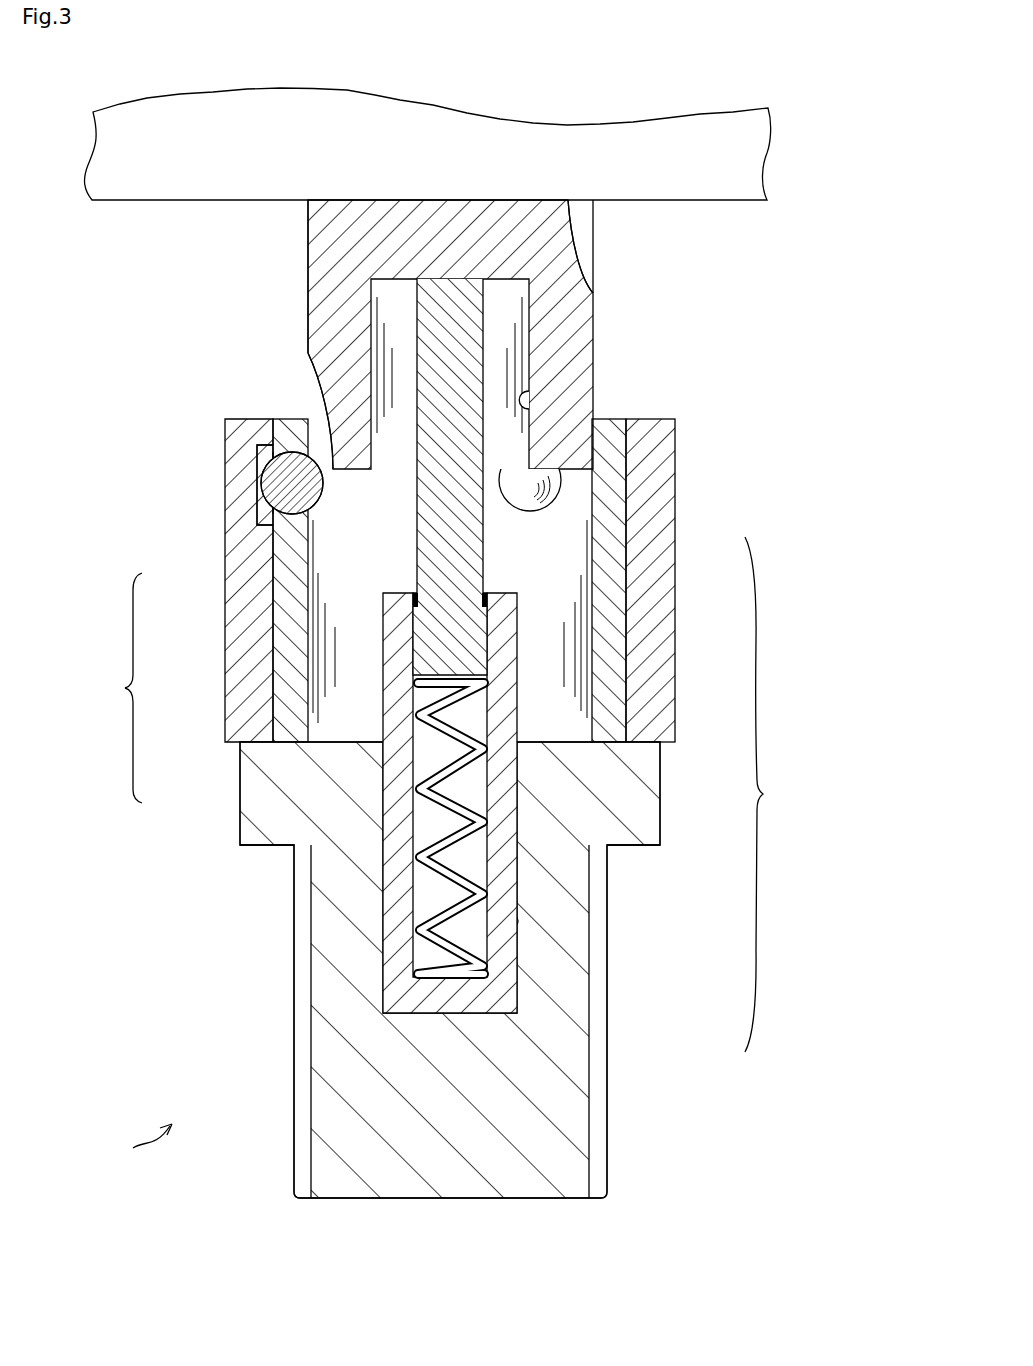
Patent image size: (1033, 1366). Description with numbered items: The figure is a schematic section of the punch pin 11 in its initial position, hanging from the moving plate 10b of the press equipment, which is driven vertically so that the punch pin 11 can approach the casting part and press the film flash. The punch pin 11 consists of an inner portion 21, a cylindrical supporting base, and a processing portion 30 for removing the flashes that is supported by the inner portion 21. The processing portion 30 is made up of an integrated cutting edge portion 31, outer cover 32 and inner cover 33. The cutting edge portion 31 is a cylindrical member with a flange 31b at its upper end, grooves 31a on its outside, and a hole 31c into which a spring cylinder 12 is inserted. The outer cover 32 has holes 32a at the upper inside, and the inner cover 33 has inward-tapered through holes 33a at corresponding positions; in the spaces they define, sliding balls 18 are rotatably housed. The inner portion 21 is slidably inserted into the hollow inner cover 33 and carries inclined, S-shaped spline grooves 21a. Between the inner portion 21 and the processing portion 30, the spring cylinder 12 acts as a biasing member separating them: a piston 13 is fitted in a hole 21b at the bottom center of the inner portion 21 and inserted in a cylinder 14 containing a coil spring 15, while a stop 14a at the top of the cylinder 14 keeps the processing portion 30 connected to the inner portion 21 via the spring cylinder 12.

The moving plate 10b is at (183, 187).
The punch pin 11 is at (139, 1150).
The spring cylinder 12 is at (117, 688).
The piston 13 is at (440, 528).
The cylinder 14 is at (398, 670).
The stop 14a is at (407, 602).
The coil spring 15 is at (447, 733).
The sliding ball 18 is at (288, 475).
The inner portion 21 is at (563, 330).
The spline groove 21a is at (572, 252).
The hole 21b is at (522, 392).
The processing portion 30 is at (770, 794).
The cutting edge portion 31 is at (565, 1047).
The groove 31a is at (302, 1124).
The flange 31b is at (262, 850).
The hole 31c is at (518, 926).
The outer cover 32 is at (659, 626).
The hole 32a is at (268, 513).
The inner cover 33 is at (606, 571).
The through hole 33a is at (268, 452).